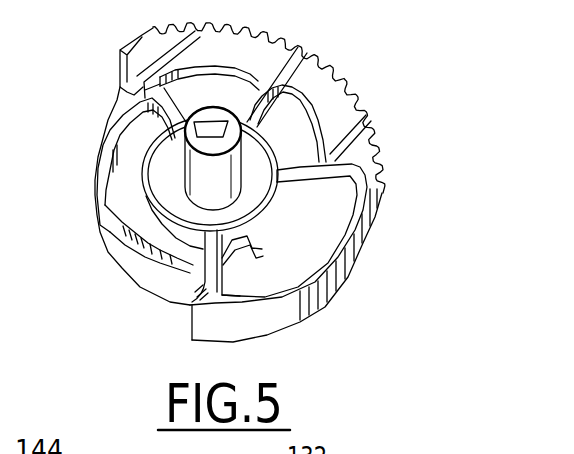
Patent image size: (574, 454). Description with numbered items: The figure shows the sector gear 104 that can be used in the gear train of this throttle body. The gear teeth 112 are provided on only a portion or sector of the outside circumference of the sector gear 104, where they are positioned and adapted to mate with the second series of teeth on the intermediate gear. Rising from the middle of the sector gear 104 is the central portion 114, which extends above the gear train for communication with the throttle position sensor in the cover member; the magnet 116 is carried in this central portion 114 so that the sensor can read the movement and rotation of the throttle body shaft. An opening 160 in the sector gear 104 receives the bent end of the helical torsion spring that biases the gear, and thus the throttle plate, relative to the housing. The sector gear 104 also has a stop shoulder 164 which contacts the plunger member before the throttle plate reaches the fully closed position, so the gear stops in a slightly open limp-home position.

The sector gear 104 is at (154, 300).
The gear teeth 112 is at (303, 44).
The central portion 114 is at (197, 173).
The magnet 116 is at (222, 129).
The opening 160 is at (268, 217).
The stop shoulder 164 is at (120, 88).